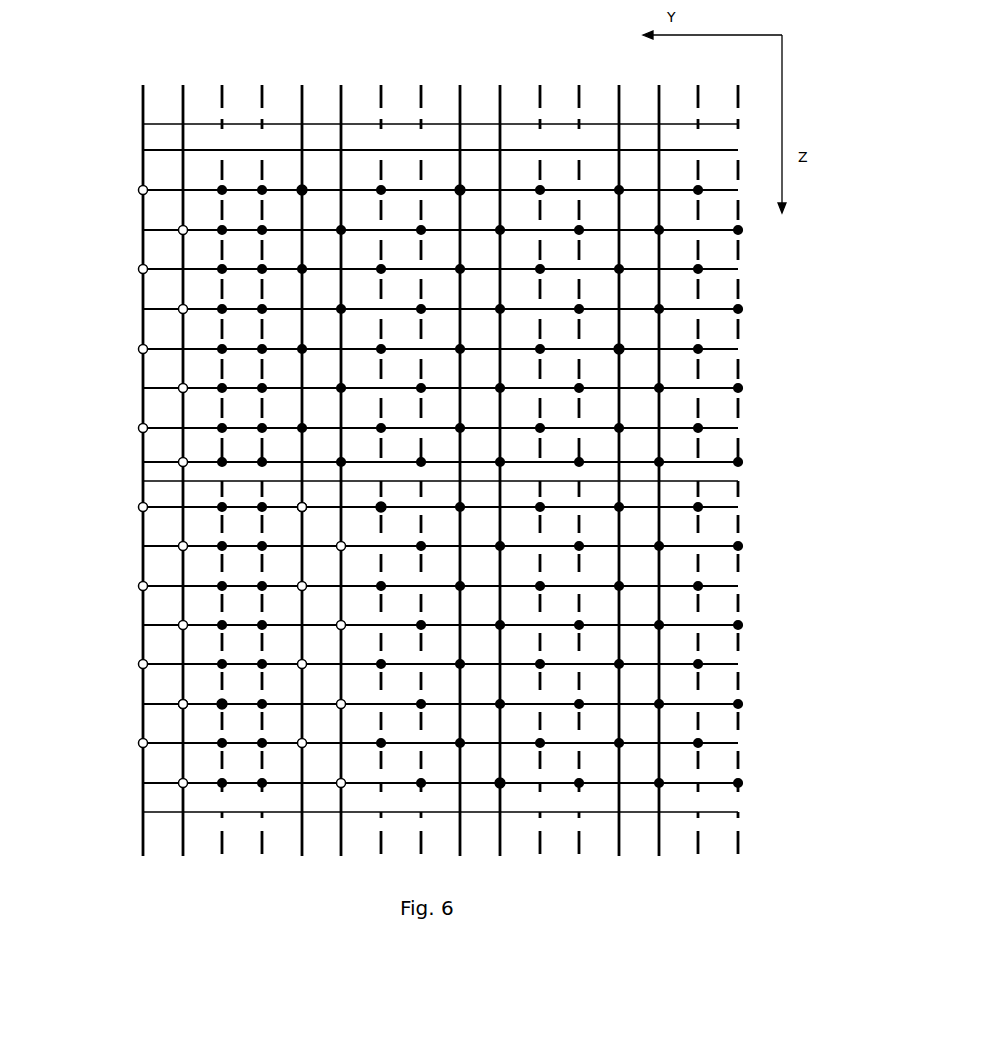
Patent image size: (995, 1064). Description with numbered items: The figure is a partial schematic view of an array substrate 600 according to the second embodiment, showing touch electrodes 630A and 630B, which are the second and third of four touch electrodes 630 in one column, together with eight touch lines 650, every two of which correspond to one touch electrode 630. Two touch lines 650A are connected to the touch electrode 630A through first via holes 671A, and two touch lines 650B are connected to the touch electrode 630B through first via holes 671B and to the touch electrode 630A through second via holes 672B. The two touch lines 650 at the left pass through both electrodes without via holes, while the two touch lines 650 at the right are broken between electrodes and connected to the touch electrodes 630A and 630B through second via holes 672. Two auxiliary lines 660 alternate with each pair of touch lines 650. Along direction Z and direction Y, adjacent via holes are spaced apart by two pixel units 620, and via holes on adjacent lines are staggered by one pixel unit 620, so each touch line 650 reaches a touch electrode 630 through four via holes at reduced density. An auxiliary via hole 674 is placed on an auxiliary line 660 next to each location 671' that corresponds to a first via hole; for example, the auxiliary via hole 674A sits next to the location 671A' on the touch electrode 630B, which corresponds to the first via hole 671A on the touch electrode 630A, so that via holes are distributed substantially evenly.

The array substrate 600 is at (155, 23).
The pixel unit 620 is at (722, 522).
The touch electrode 630 is at (513, 95).
The touch electrode 630A is at (734, 407).
The touch electrode 630B is at (736, 604).
The touch line 650 is at (183, 172).
The touch line 650A is at (302, 150).
The touch line 650B is at (459, 189).
The auxiliary line 660 is at (262, 280).
The first via hole 671A is at (263, 164).
The location corresponding to first via hole 671A' is at (178, 487).
The first via hole 671B is at (501, 783).
The location corresponding to a first via hole 671' is at (138, 695).
The second via hole 672 is at (620, 349).
The second via hole 672B is at (459, 189).
The auxiliary via hole 674 is at (222, 704).
The auxiliary via hole 674A is at (379, 508).